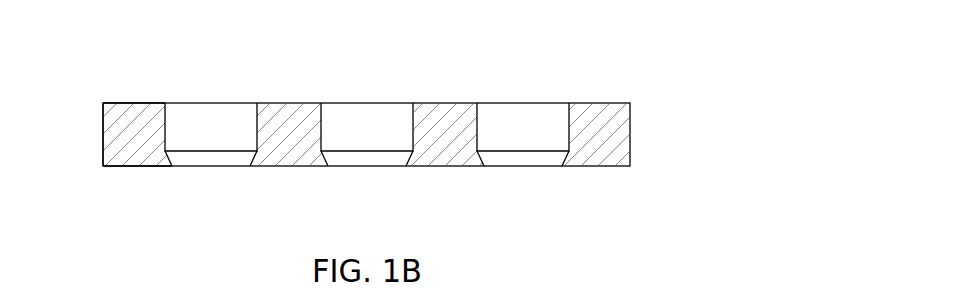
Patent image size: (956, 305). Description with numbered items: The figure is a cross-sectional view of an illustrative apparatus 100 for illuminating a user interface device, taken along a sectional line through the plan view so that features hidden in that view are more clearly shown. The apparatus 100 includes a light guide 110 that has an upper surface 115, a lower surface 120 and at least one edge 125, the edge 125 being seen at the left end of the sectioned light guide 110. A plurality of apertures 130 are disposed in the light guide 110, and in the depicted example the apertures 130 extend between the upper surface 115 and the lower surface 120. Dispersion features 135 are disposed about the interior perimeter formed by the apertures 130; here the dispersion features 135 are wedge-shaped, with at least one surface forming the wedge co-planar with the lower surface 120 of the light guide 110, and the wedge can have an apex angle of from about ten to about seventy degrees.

The apparatus 100 is at (617, 60).
The light guide 110 is at (596, 145).
The upper surface 115 is at (138, 118).
The lower surface 120 is at (140, 166).
The edge 125 is at (103, 122).
The apertures 130 is at (214, 129).
The dispersion features 135 is at (173, 161).